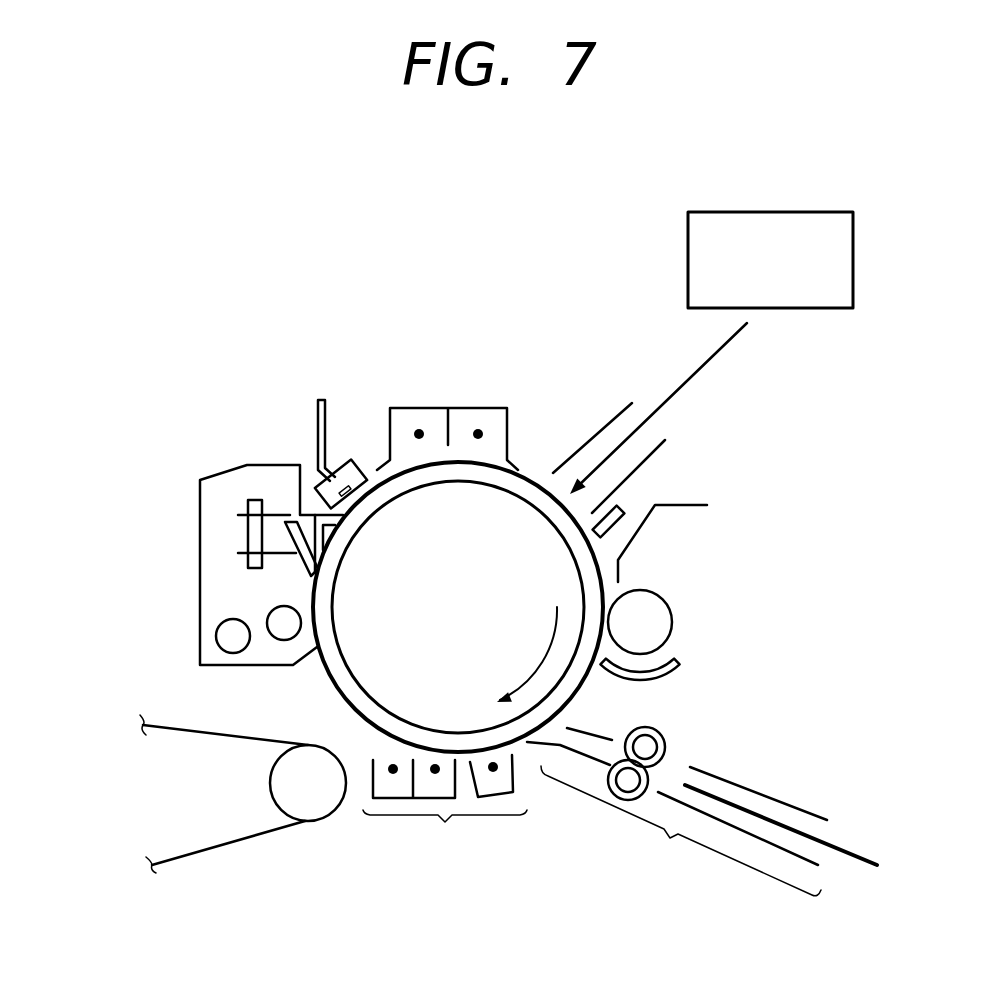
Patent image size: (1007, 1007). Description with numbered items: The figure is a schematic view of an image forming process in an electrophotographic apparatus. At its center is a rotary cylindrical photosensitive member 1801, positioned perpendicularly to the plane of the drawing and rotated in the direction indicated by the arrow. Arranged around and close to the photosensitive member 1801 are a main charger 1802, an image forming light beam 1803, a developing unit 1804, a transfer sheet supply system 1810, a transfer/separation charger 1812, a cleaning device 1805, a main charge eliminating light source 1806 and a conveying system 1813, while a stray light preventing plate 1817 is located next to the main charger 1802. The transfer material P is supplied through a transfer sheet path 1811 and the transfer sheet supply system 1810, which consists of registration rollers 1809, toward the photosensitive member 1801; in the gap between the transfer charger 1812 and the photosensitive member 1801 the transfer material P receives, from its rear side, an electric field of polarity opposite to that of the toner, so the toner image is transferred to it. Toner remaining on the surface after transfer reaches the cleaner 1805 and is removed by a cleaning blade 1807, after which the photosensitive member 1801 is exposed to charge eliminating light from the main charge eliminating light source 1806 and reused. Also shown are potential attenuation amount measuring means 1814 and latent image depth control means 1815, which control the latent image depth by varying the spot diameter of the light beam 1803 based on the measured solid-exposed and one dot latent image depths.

The photosensitive member 1801 is at (410, 490).
The main charger 1802 is at (482, 418).
The image forming light beam 1803 is at (692, 377).
The developing unit 1804 is at (658, 590).
The cleaning device 1805 is at (207, 618).
The main charge eliminating light source 1806 is at (335, 477).
The cleaning blade 1807 is at (298, 570).
The registration rollers 1809 is at (658, 728).
The transfer sheet supply system 1810 is at (674, 812).
The transfer sheet path 1811 is at (760, 793).
The transfer/separation charger 1812 is at (445, 805).
The conveying system 1813 is at (218, 737).
The potential attenuation amount measuring means 1814 is at (617, 507).
The latent image depth control means 1815 is at (795, 210).
The stray light preventing plate 1817 is at (367, 480).
The transfer material P is at (840, 845).